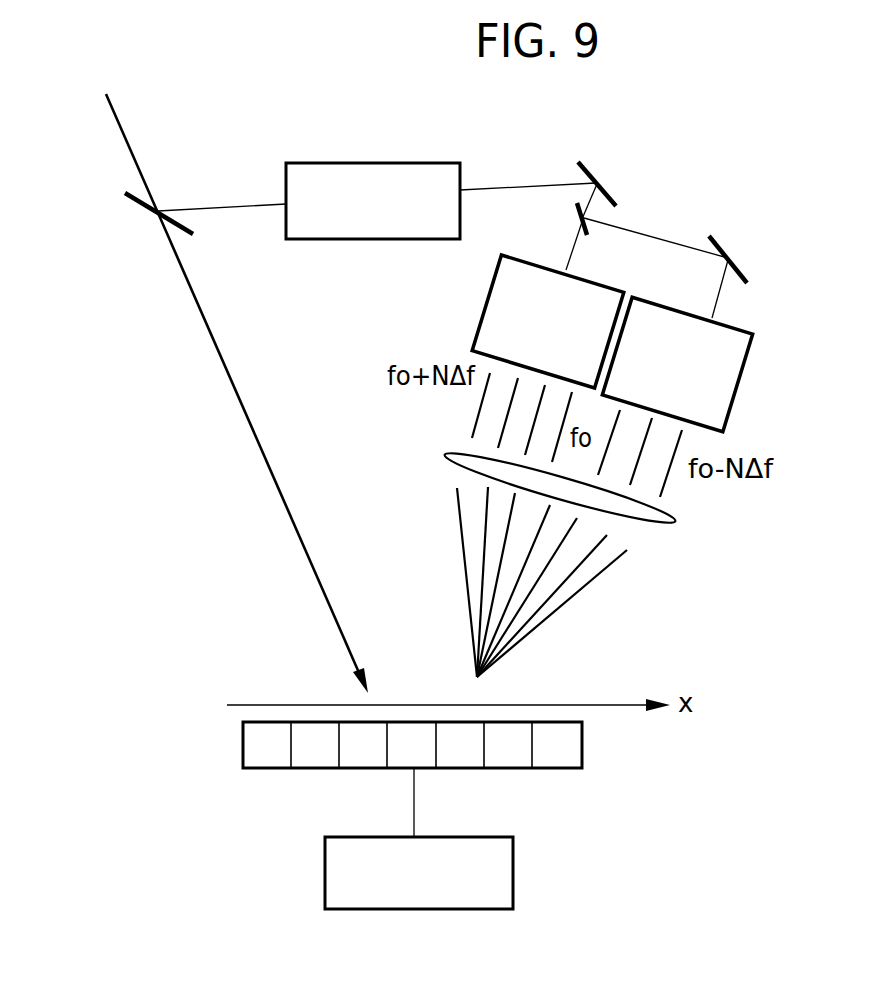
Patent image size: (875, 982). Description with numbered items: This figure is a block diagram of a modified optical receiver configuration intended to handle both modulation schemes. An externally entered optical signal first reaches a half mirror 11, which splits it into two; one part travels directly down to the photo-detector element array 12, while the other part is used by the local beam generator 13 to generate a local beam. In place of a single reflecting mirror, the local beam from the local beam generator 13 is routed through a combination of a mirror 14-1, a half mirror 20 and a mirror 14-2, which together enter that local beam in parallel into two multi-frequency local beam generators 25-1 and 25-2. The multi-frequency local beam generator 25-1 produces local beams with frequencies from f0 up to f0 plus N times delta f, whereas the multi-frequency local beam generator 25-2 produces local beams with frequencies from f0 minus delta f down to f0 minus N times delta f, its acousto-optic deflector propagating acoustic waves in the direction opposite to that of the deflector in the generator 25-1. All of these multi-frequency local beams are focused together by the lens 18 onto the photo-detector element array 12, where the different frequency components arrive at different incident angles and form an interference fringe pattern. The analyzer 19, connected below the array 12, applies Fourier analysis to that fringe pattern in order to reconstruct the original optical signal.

The half mirror 11 is at (138, 205).
The local beam generator 13 is at (353, 240).
The half mirror 20 is at (577, 218).
The mirror 14-1 is at (591, 165).
The mirror 14-2 is at (745, 264).
The multi-frequency local beam generator 25-1 is at (490, 302).
The multi-frequency local beam generator 25-2 is at (745, 370).
The lens 18 is at (678, 522).
The photo-detector element array 12 is at (243, 748).
The analyzer 19 is at (513, 885).